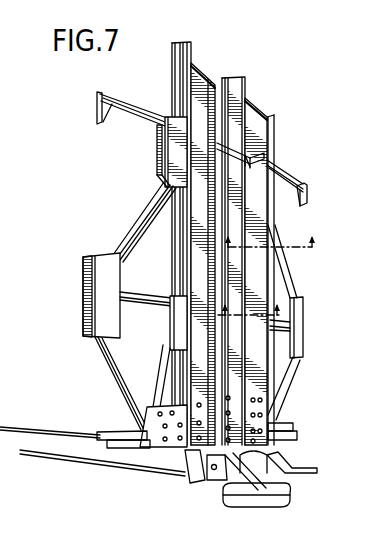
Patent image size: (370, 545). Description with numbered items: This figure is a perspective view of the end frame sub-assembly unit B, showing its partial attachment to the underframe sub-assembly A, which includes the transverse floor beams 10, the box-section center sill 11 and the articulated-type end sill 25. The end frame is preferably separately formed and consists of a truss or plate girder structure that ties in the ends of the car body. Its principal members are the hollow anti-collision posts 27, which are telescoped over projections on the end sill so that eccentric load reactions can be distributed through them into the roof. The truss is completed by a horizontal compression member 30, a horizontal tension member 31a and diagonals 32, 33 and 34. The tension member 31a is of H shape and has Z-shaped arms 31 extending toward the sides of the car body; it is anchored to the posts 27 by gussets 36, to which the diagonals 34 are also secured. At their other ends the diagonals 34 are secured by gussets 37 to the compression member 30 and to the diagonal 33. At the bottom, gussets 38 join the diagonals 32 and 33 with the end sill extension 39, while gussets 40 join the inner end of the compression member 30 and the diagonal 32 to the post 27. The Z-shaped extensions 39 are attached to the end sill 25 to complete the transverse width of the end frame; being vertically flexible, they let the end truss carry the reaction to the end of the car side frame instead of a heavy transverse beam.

The transverse floor beam 10 is at (279, 229).
The center sill 11 is at (252, 300).
The end sill 25 is at (230, 484).
The anti-collision post 27 is at (256, 209).
The horizontal compression member 30 is at (290, 315).
The arm 31 is at (282, 175).
The horizontal tension member 31a is at (240, 143).
The diagonal 32 is at (167, 375).
The diagonal 33 is at (118, 377).
The diagonal 34 is at (132, 218).
The gusset 36 is at (177, 145).
The gusset 37 is at (100, 285).
The gusset 38 is at (157, 442).
The end sill extension 39 is at (123, 448).
The gusset 40 is at (178, 323).
The underframe sub-assembly A is at (53, 426).
The end frame sub-assembly unit B is at (278, 137).